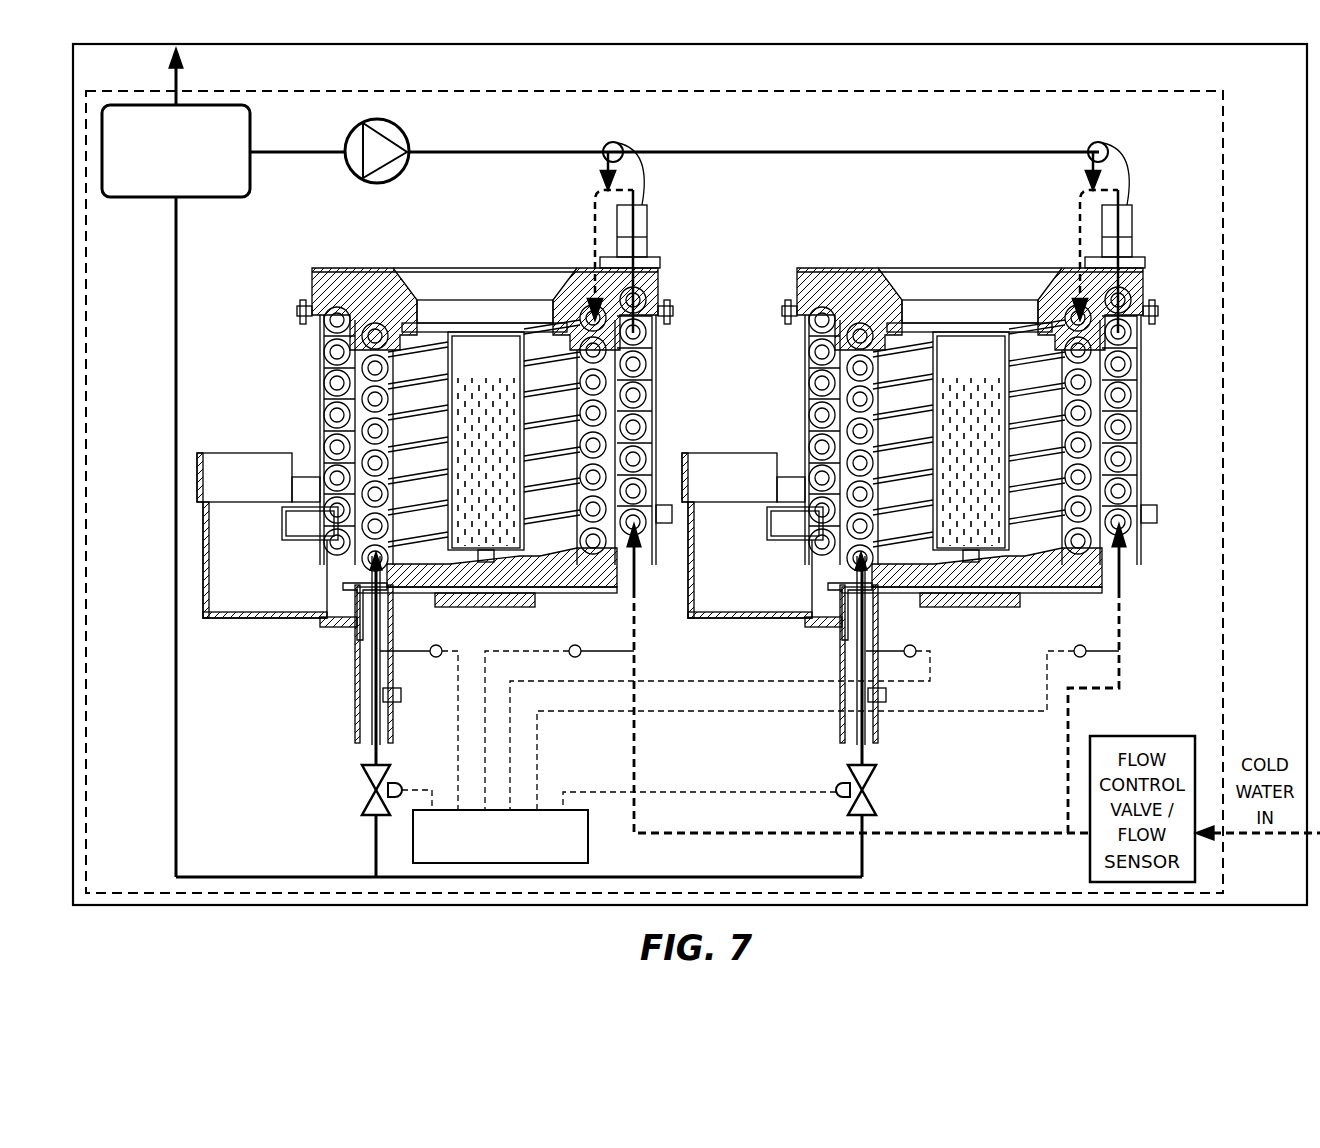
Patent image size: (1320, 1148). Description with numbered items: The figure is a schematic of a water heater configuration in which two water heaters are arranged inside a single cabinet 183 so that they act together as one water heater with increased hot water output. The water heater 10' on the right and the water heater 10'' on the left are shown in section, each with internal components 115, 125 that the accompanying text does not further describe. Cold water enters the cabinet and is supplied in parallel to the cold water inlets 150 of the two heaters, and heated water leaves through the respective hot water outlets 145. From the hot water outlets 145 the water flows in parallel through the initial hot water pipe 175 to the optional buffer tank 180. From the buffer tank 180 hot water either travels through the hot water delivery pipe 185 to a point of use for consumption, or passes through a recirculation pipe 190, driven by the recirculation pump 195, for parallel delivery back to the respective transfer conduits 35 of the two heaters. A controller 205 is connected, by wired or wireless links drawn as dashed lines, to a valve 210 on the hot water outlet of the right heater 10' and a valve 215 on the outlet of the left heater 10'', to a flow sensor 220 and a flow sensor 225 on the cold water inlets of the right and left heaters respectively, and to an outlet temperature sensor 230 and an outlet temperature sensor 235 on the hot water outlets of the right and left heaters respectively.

The water heater 10' is at (952, 391).
The water heater 10'' is at (435, 391).
The transfer conduit 35 is at (592, 238).
The inner heat exchanger coil 115 is at (598, 378).
The outer heat exchanger coil 125 is at (632, 432).
The hot water outlet 145 is at (372, 667).
The cold water inlet 150 is at (634, 622).
The initial hot water pipe 175 is at (176, 410).
The buffer tank 180 is at (148, 197).
The cabinet 183 is at (947, 92).
The hot water delivery pipe 185 is at (172, 86).
The recirculation pipe 190 is at (782, 153).
The recirculation pump 195 is at (409, 140).
The controller 205 is at (588, 826).
The valve 210 is at (843, 785).
The valve 215 is at (362, 790).
The flow sensor 220 is at (1078, 645).
The flow sensor 225 is at (573, 645).
The outlet temperature sensor 230 is at (912, 645).
The outlet temperature sensor 235 is at (436, 657).